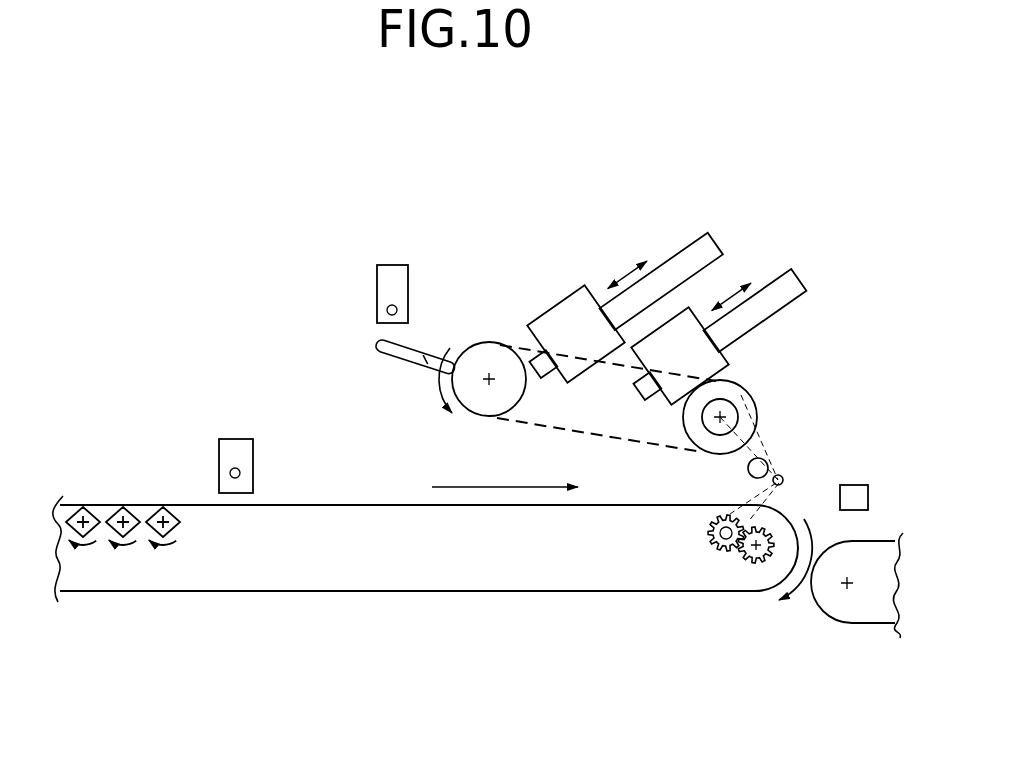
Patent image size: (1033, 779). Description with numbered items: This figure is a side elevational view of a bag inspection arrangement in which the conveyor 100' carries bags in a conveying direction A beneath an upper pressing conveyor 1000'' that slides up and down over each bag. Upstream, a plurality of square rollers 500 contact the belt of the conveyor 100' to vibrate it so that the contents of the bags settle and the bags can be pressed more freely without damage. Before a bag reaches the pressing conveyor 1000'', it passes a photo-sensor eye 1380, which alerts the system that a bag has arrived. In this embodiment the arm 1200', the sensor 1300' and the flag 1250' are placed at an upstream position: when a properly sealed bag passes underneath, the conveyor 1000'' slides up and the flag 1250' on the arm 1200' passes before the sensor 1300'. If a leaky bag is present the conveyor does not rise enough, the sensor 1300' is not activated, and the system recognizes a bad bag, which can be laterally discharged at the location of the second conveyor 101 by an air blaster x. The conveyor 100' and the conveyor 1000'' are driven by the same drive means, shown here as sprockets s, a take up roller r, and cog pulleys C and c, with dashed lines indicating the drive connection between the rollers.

The conveyor 100' is at (432, 569).
The square rollers 500 is at (188, 516).
The photo-sensor eye 1380 is at (264, 443).
The sensor 1300' is at (336, 287).
The flag 1250' is at (369, 353).
The arm 1200' is at (465, 399).
The conveyor 1000'' is at (656, 318).
The cog pulleys C is at (723, 405).
The take up roller r is at (749, 470).
The cog pulley c is at (715, 531).
The sprockets s is at (722, 548).
The air blaster x is at (856, 492).
The second conveyor 101 is at (857, 640).
The conveying direction A is at (505, 469).